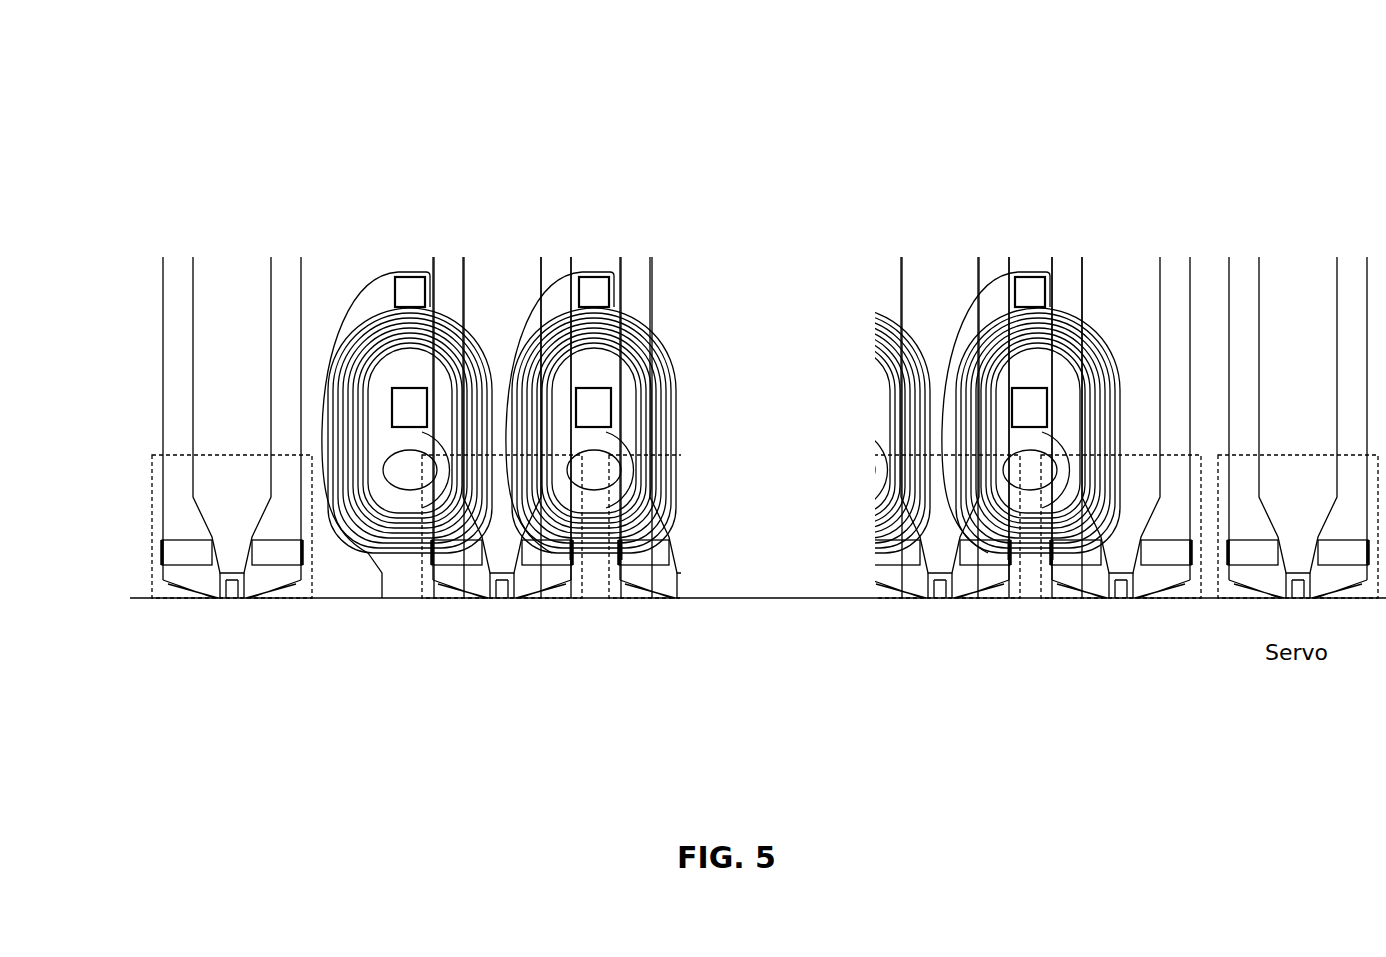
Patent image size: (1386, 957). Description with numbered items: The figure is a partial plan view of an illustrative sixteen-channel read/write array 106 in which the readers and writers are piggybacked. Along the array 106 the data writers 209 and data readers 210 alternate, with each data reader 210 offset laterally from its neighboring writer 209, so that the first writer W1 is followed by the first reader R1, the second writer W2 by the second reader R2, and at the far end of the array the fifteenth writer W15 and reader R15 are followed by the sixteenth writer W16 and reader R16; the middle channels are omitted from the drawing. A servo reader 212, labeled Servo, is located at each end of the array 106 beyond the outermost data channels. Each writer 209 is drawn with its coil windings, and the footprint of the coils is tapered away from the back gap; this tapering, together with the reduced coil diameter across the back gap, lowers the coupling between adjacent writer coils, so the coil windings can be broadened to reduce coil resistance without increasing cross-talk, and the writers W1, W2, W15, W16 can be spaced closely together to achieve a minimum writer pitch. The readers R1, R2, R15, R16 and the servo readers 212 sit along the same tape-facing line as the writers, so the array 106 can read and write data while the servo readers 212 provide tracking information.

The array of read and/or write elements 106 is at (160, 146).
The writer 209 is at (397, 588).
The reader 210 is at (520, 592).
The servo reader 212 is at (193, 585).
The writer W1 is at (410, 641).
The reader R1 is at (500, 631).
The writer W2 is at (591, 471).
The reader R2 is at (689, 461).
The writer W15 is at (845, 471).
The reader R15 is at (940, 461).
The writer W16 is at (1031, 471).
The reader R16 is at (1121, 461).